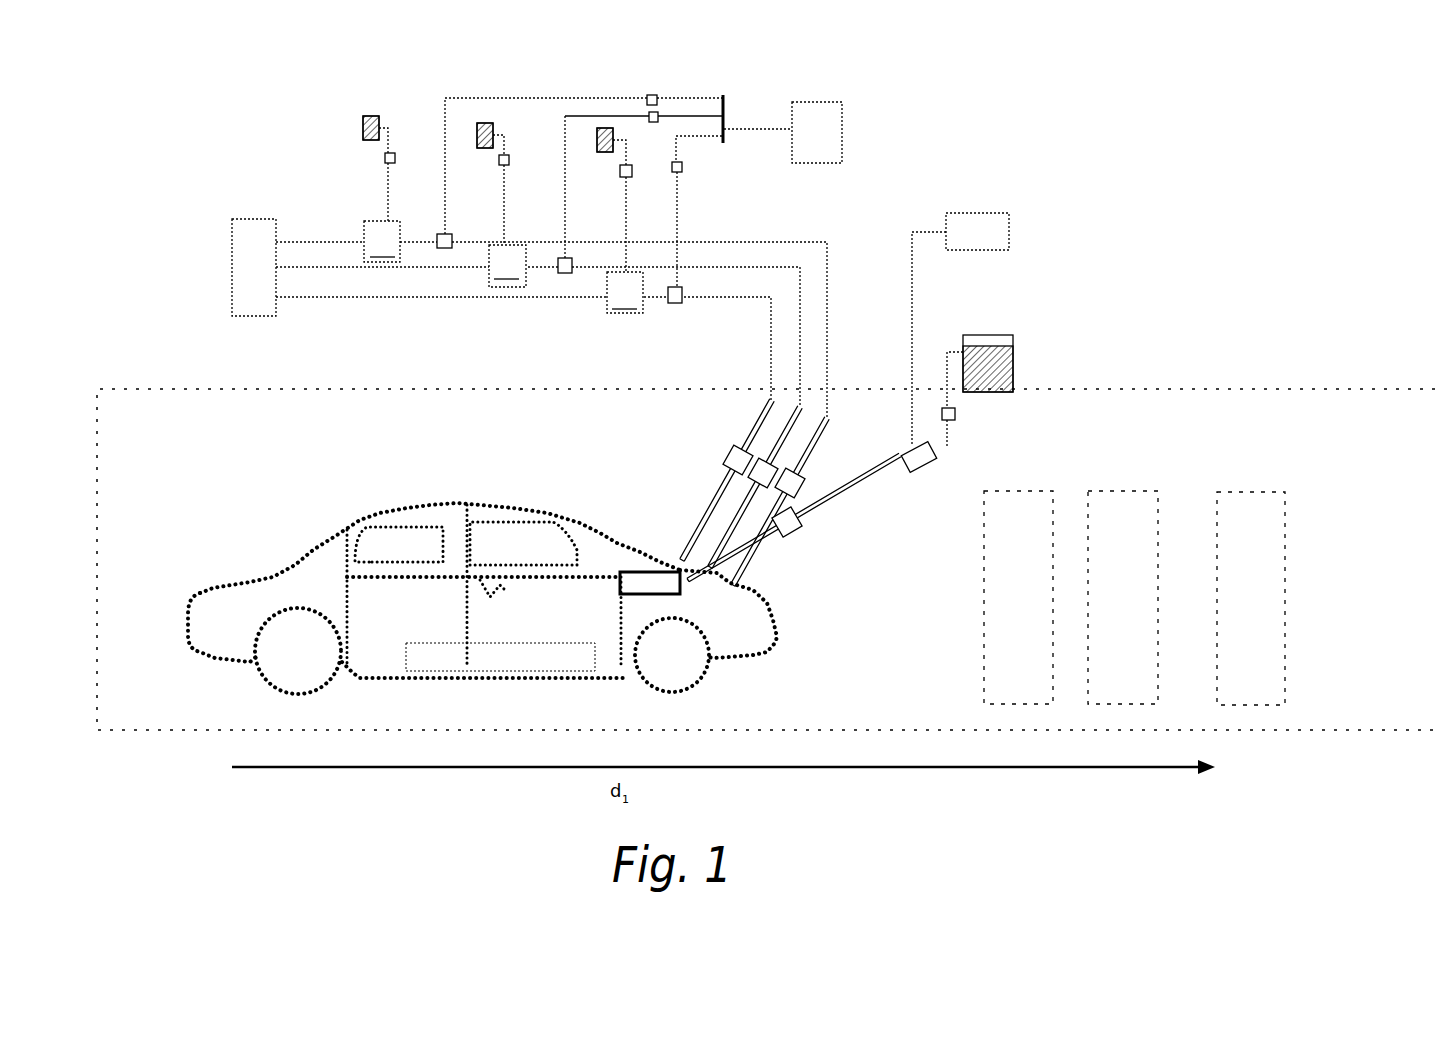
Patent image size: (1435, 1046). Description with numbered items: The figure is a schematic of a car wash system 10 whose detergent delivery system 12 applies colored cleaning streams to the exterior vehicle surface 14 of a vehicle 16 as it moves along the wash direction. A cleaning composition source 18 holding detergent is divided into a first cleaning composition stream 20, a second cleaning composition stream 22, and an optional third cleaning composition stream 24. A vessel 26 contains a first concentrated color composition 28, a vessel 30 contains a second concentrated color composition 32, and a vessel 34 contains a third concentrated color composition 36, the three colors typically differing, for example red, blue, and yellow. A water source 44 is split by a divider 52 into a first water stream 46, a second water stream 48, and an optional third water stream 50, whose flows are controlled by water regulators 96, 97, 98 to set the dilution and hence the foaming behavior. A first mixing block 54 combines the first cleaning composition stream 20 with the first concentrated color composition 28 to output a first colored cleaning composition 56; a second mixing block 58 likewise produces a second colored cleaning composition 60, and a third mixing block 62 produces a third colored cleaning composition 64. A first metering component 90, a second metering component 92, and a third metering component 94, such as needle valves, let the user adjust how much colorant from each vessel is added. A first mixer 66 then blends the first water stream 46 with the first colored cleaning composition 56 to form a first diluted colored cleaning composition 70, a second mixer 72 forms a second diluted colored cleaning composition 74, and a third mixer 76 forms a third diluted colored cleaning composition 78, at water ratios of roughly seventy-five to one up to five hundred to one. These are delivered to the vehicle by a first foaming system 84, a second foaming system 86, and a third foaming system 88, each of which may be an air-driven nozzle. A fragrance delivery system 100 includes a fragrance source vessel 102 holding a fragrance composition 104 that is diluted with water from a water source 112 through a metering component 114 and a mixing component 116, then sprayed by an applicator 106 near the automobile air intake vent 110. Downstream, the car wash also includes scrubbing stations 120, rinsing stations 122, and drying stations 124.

The car wash system 10 is at (1198, 199).
The detergent delivery system 12 is at (913, 164).
The exterior vehicle surface 14 is at (740, 580).
The vehicle 16 is at (649, 540).
The cleaning composition source 18 is at (240, 235).
The first cleaning composition stream 20 is at (306, 242).
The second cleaning composition stream 22 is at (348, 263).
The third cleaning composition stream 24 is at (327, 298).
The vessel 26 is at (370, 116).
The first concentrated color composition 28 is at (363, 130).
The vessel 30 is at (483, 123).
The second concentrated color composition 32 is at (478, 138).
The vessel 34 is at (603, 128).
The third concentrated color composition 36 is at (597, 138).
The water source 44 is at (832, 102).
The first water stream 46 is at (635, 98).
The second water stream 48 is at (673, 116).
The third water stream 50 is at (690, 136).
The divider 52 is at (725, 122).
The first mixing block 54 is at (382, 241).
The first colored cleaning composition 56 is at (425, 242).
The second mixing block 58 is at (507, 266).
The second colored cleaning composition 60 is at (545, 242).
The third mixing block 62 is at (625, 292).
The third colored cleaning composition 64 is at (655, 303).
The first mixer 66 is at (450, 250).
The first diluted colored cleaning composition 70 is at (468, 242).
The second mixer 72 is at (565, 273).
The second diluted colored cleaning composition 74 is at (582, 267).
The third mixer 76 is at (675, 303).
The third diluted colored cleaning composition 78 is at (710, 297).
The first foaming system 84 is at (800, 477).
The second foaming system 86 is at (753, 476).
The third foaming system 88 is at (730, 447).
The first metering component 90 is at (385, 158).
The second metering component 92 is at (499, 160).
The third metering component 94 is at (620, 171).
The water regulator 96 is at (652, 95).
The water regulator 97 is at (653, 122).
The water regulator 98 is at (676, 172).
The fragrance delivery system 100 is at (1058, 347).
The fragrance source vessel 102 is at (1000, 335).
The fragrance composition 104 is at (995, 373).
The applicator 106 is at (793, 527).
The automobile air intake vent 110 is at (683, 583).
The water source 112 is at (987, 213).
The metering component 114 is at (952, 420).
The mixing component 116 is at (940, 470).
The scrubbing stations 120 is at (1013, 490).
The rinsing stations 122 is at (1122, 490).
The drying stations 124 is at (1250, 492).